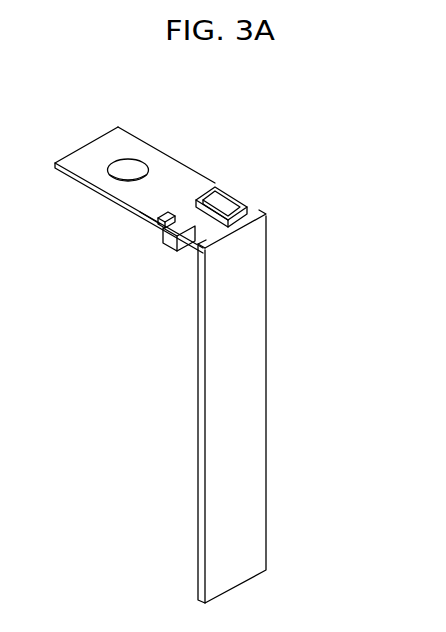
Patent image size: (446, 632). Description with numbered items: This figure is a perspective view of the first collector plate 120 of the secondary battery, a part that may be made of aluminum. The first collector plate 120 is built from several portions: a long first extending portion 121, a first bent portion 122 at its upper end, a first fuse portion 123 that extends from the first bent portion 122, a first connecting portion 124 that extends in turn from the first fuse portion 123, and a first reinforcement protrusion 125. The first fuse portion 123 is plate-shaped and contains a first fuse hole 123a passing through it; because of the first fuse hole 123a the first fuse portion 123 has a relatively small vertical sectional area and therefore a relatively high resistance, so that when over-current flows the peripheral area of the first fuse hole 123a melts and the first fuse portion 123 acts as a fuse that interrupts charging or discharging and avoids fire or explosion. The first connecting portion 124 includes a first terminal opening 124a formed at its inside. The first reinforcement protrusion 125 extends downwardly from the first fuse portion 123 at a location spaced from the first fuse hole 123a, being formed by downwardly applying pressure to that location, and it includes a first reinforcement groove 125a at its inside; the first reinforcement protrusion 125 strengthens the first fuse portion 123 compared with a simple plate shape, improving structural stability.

The first collector plate 120 is at (312, 198).
The first extending portion 121 is at (263, 343).
The first bent portion 122 is at (242, 231).
The first fuse portion 123 is at (203, 197).
The first fuse hole 123a is at (248, 204).
The first connecting portion 124 is at (92, 148).
The first terminal opening 124a is at (128, 162).
The first reinforcement protrusion 125 is at (173, 249).
The first reinforcement groove 125a is at (158, 218).